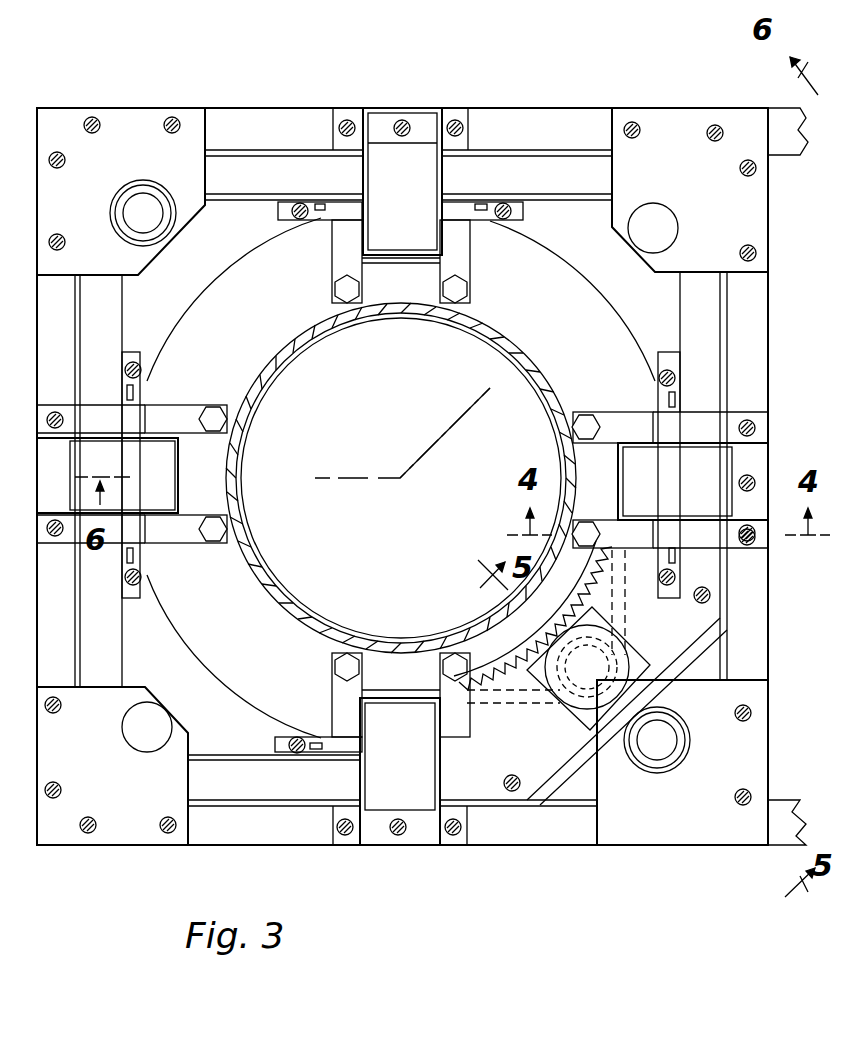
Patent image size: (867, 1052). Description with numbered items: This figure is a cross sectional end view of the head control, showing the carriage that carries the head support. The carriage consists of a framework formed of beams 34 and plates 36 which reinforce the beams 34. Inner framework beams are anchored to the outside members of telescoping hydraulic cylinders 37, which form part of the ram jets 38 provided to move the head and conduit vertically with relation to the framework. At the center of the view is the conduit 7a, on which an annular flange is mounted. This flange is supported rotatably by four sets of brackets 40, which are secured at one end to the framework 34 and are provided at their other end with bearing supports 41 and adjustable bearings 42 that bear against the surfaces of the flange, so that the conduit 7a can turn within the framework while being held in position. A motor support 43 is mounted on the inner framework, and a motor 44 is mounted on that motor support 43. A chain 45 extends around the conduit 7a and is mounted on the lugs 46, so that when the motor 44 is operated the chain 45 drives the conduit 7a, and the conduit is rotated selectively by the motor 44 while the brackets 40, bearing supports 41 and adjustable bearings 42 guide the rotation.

The conduit 7a is at (492, 330).
The beams 34 is at (507, 832).
The plates 36 is at (402, 706).
The telescoping hydraulic cylinders 37 is at (423, 457).
The ram jets 38 is at (395, 475).
The brackets 40 is at (402, 476).
The bearing supports 41 is at (401, 477).
The adjustable bearings 42 is at (399, 478).
The motor support 43 is at (485, 773).
The motor 44 is at (640, 648).
The chain 45 is at (620, 578).
The lugs 46 is at (306, 345).